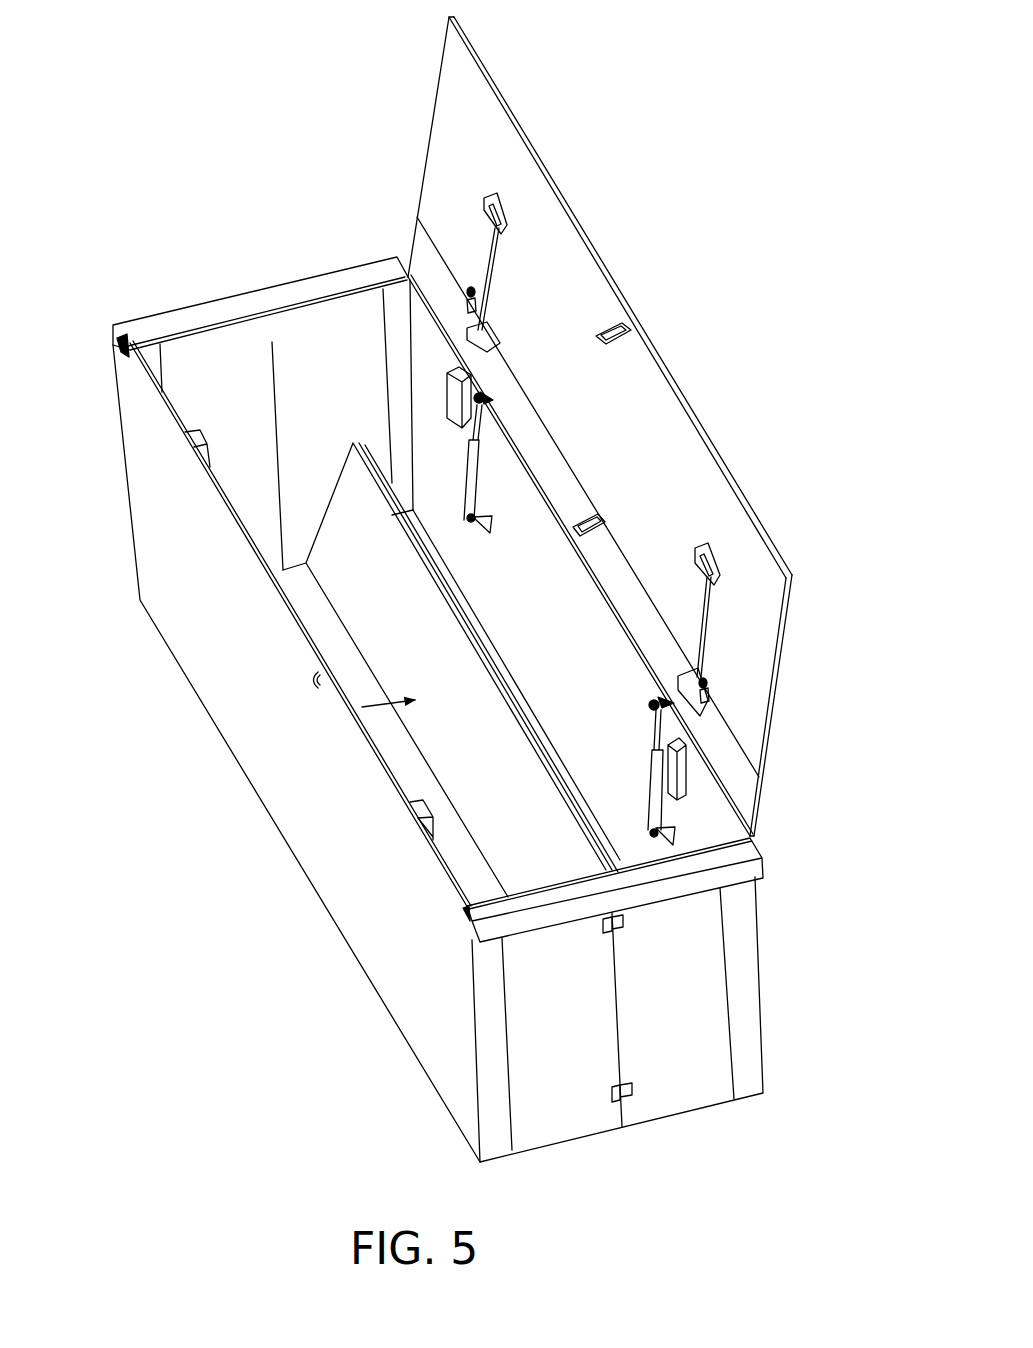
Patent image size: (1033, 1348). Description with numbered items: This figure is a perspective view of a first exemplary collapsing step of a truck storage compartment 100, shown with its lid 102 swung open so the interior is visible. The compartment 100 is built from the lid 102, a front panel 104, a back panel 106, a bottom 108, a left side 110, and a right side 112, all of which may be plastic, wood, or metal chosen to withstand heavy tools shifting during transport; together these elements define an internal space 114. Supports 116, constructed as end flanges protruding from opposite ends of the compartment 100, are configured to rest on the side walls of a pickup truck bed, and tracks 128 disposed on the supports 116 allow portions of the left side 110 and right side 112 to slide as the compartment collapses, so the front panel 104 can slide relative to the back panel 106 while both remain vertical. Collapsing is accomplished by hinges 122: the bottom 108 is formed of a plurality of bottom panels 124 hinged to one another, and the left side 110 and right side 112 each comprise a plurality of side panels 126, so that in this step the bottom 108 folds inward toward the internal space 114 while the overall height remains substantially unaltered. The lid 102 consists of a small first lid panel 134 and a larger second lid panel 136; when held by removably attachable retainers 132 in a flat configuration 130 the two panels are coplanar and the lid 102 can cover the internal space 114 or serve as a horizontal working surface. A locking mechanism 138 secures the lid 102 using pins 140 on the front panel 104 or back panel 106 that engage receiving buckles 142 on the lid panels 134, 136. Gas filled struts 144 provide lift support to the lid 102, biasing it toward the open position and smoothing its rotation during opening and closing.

The storage compartment 100 is at (733, 66).
The lid 102 is at (677, 420).
The front panel 104 is at (140, 492).
The back panel 106 is at (547, 652).
The bottom 108 is at (383, 623).
The left side 110 is at (300, 325).
The right side 112 is at (742, 980).
The internal space 114 is at (482, 568).
The supports 116 is at (223, 313).
The hinges 122 is at (466, 280).
The bottom panels 124 is at (453, 777).
The side panels 126 is at (188, 347).
The tracks 128 is at (116, 358).
The flat configuration 130 is at (745, 471).
The retainers 132 is at (499, 278).
The first lid panel 134 is at (647, 643).
The second lid panel 136 is at (582, 272).
The locking mechanism 138 is at (633, 312).
The pins 140 is at (312, 673).
The receiving buckles 142 is at (602, 515).
The struts 144 is at (477, 460).